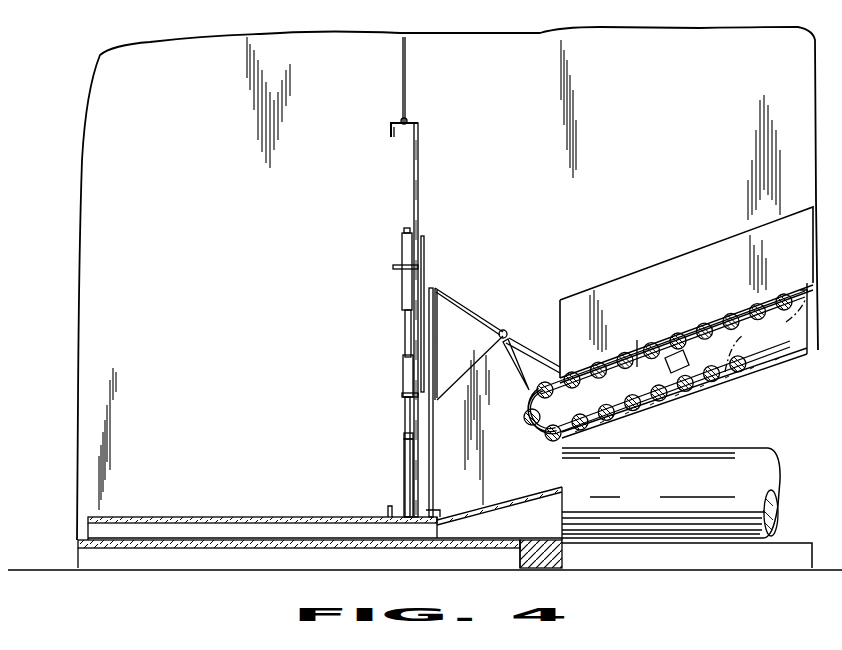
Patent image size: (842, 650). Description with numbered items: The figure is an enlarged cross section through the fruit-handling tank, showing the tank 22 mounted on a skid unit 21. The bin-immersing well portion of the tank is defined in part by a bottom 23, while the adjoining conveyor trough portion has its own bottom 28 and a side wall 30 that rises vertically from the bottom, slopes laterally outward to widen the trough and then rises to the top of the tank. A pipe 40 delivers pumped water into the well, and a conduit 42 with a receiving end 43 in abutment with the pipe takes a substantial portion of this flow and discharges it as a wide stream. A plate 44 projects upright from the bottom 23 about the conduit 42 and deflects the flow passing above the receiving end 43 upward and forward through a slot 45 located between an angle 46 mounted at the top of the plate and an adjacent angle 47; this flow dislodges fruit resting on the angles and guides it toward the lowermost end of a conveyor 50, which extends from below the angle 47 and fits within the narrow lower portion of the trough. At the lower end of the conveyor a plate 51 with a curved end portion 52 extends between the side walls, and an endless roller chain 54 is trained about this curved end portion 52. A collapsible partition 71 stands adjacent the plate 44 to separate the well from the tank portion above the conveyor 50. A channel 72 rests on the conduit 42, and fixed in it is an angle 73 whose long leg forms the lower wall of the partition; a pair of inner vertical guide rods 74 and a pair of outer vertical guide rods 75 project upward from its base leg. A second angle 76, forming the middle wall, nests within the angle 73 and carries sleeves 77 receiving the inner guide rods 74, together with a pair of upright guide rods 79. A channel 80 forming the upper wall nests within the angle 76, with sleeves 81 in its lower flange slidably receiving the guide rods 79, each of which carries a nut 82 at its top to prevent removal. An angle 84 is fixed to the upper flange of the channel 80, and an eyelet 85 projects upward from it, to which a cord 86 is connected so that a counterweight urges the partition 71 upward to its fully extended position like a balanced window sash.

The skid unit 21 is at (723, 558).
The tank 22 is at (757, 38).
The bottom 23 is at (78, 543).
The bottom 28 is at (738, 381).
The side wall 30 is at (688, 38).
The pipe 40 is at (735, 455).
The conduit 42 is at (225, 528).
The receiving end 43 is at (495, 502).
The plate 44 is at (437, 440).
The slot 45 is at (505, 328).
The angle 46 is at (513, 358).
The angle 47 is at (529, 358).
The conveyor 50 is at (675, 329).
The plate 51 is at (640, 345).
The curved end portion 52 is at (543, 433).
The endless roller chain 54 is at (766, 331).
The collapsible partition 71 is at (385, 194).
The channel 72 is at (388, 505).
The angle 73 is at (430, 478).
The inner vertical guide rods 74 is at (405, 452).
The outer vertical guide rods 75 is at (400, 440).
The second angle 76 is at (424, 259).
The sleeves 77 is at (403, 365).
The upright guide rods 79 is at (404, 318).
The channel 80 is at (420, 184).
The sleeves 81 is at (400, 263).
The nut 82 is at (404, 230).
The angle 84 is at (391, 134).
The eyelet 85 is at (401, 118).
The cord 86 is at (406, 90).